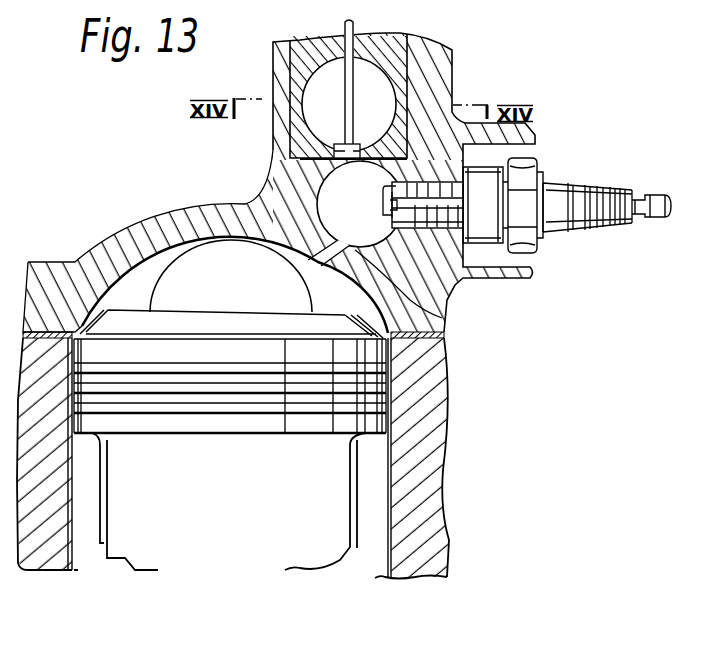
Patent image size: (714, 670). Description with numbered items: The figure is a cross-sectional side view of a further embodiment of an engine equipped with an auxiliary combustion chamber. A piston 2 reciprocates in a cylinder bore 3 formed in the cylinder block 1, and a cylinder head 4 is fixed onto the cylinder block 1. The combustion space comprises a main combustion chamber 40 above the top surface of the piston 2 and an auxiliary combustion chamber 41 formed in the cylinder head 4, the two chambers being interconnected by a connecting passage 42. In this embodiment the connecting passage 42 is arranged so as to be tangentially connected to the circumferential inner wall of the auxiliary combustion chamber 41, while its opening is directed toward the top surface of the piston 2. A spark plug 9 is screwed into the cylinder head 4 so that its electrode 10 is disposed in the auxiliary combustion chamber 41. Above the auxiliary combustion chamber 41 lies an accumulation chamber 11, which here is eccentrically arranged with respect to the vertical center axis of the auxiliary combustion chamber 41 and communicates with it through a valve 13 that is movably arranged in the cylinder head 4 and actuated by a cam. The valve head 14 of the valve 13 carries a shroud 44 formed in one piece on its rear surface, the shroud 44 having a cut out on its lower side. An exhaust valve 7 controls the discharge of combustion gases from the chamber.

The cylinder block 1 is at (415, 557).
The piston 2 is at (318, 562).
The cylinder bore 3 is at (390, 518).
The cylinder head 4 is at (357, 335).
The exhaust valve 7 is at (205, 268).
The spark plug 9 is at (555, 192).
The electrode of the spark plug 10 is at (460, 283).
The accumulation chamber 11 is at (383, 100).
The valve 13 is at (350, 82).
The valve head 14 is at (272, 187).
The main combustion chamber 40 is at (345, 307).
The auxiliary combustion chamber 41 is at (357, 210).
The connecting passage 42 is at (444, 332).
The shroud 44 is at (333, 143).